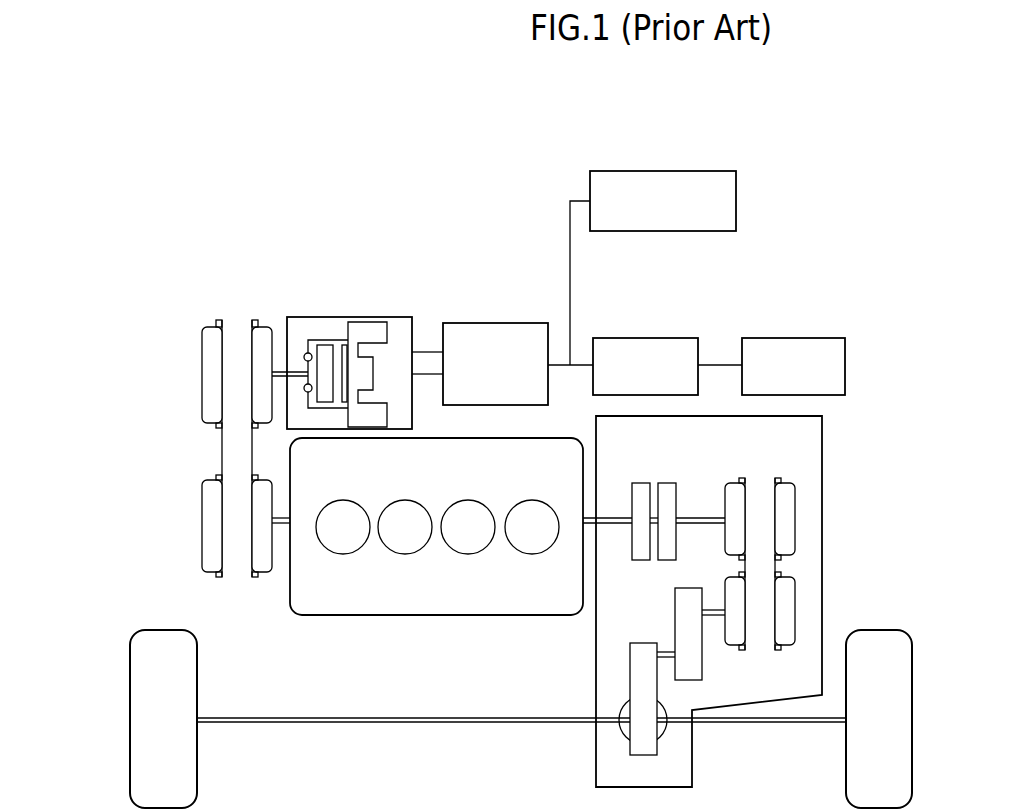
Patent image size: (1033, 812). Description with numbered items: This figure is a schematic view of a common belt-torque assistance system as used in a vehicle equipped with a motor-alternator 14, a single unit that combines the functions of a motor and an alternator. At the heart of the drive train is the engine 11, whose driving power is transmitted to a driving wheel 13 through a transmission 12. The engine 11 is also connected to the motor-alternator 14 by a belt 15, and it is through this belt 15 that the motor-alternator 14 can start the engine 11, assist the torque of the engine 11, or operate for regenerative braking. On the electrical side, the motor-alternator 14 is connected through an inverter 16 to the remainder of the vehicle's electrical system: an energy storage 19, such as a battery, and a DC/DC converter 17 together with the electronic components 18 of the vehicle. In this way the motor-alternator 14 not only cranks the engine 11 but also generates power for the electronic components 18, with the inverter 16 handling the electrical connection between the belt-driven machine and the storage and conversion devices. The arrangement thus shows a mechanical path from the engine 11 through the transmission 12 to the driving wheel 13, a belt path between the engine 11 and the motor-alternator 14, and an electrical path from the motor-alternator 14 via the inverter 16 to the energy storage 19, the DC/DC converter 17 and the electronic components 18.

The engine 11 is at (437, 600).
The transmission 12 is at (822, 553).
The driving wheel 13 is at (140, 718).
The motor-alternator 14 is at (348, 317).
The belt 15 is at (233, 448).
The inverter 16 is at (492, 323).
The DC/DC converter 17 is at (657, 171).
The electronic components 18 is at (640, 338).
The energy storage 19 is at (790, 338).